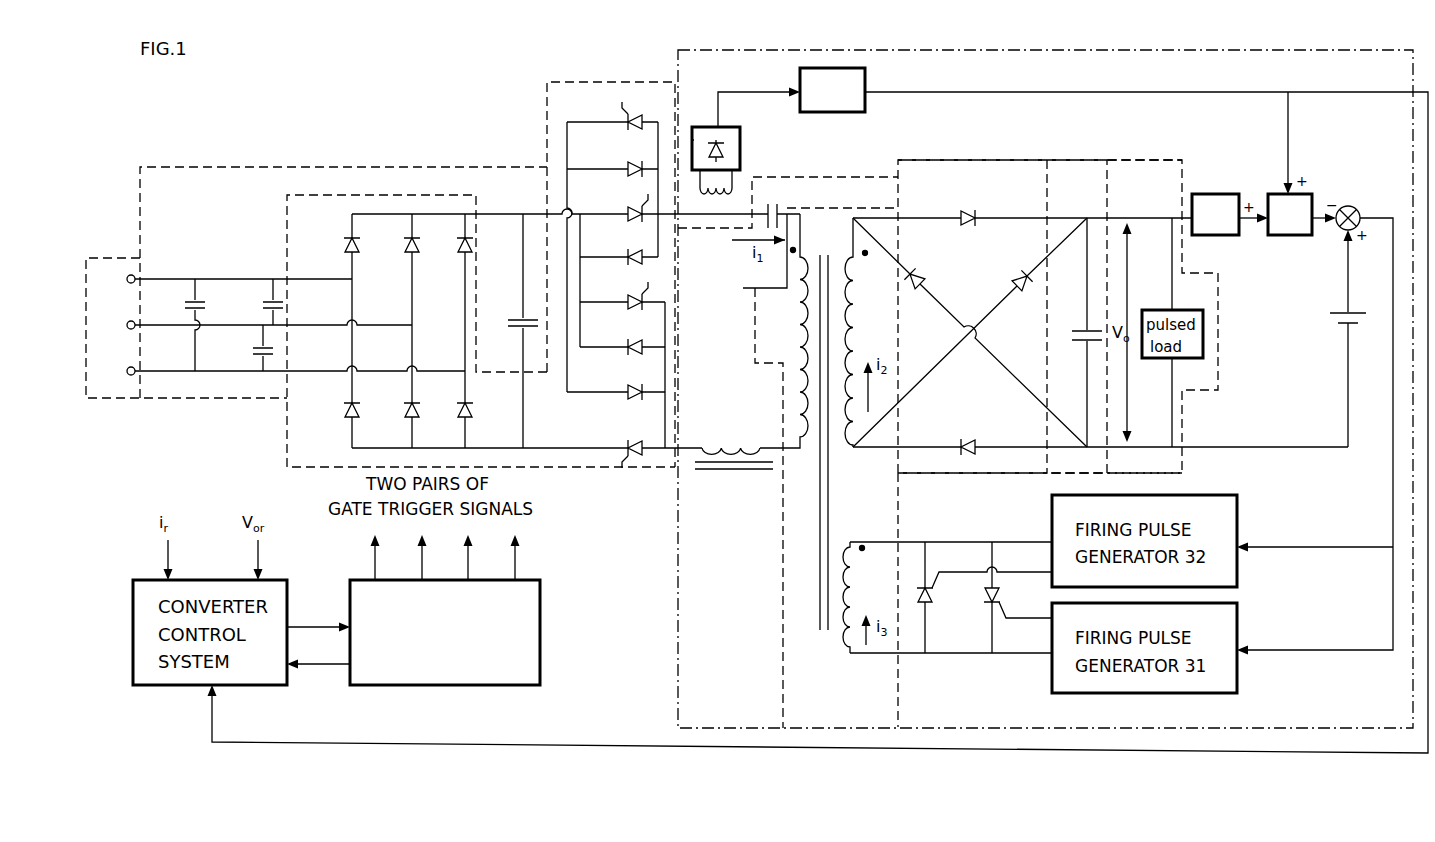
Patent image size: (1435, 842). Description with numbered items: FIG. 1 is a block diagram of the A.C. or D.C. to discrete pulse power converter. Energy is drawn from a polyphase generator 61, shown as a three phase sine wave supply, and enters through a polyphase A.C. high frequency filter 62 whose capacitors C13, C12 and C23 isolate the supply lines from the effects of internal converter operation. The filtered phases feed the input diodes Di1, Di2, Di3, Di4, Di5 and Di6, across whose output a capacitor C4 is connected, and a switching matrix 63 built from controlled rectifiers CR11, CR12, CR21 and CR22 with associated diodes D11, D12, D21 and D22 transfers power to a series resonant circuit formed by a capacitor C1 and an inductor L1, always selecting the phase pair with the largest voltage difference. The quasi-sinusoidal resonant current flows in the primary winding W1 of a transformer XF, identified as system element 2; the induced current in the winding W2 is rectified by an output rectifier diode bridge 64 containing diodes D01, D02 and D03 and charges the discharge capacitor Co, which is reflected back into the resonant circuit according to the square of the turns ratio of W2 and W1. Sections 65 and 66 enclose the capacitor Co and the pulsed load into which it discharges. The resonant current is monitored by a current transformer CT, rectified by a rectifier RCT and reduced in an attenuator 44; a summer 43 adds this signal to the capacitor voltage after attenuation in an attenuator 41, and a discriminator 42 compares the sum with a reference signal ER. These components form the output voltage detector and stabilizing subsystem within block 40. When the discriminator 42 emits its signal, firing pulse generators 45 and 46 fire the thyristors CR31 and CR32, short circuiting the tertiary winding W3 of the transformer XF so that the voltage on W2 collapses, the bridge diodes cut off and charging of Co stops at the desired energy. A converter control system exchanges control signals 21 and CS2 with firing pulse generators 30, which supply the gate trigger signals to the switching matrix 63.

The transformer system element 2 is at (780, 596).
The control signal CS1 21 is at (292, 592).
The firing pulse generators 30 is at (540, 596).
The output voltage detector and stabilizing subsystem 40 is at (1064, 50).
The attenuator 41 is at (1212, 240).
The discriminator 42 is at (1355, 207).
The summer 43 is at (1286, 240).
The attenuator 44 is at (836, 118).
The firing pulse generator 45 is at (1176, 484).
The firing pulse generator 46 is at (1166, 713).
The polyphase generator 61 is at (140, 259).
The polyphase A.C. high frequency filter 62 is at (248, 167).
The switching matrix 63 is at (640, 81).
The output rectifier diode bridge 64 is at (990, 160).
The output filter capacitor section 65 is at (1102, 160).
The load section 66 is at (1168, 160).
The input filter capacitor C13 is at (185, 300).
The input filter capacitor C12 is at (262, 300).
The input filter capacitor C23 is at (252, 350).
The DC link capacitor C4 is at (518, 330).
The resonant capacitor C1 is at (780, 205).
The resonant inductor L1 is at (708, 446).
The current transformer CT is at (746, 141).
The rectifier RCT is at (745, 140).
The transformer XF is at (822, 432).
The primary winding W1 is at (790, 334).
The secondary winding W2 is at (878, 334).
The tertiary winding W3 is at (866, 597).
The output rectifier bridge diode D01 is at (973, 206).
The output rectifier bridge diode D02 is at (1015, 280).
The output rectifier bridge diode D03 is at (922, 278).
The discharge capacitor Co is at (1079, 332).
The reference signal ER is at (1352, 338).
The thyristor CR31 is at (1000, 612).
The thyristor CR32 is at (933, 604).
The thyristor CR11 is at (624, 208).
The thyristor CR12 is at (626, 299).
The thyristor CR21 is at (624, 118).
The thyristor CR22 is at (618, 452).
The feedback diode D11 is at (628, 253).
The feedback diode D12 is at (626, 344).
The feedback diode D21 is at (628, 165).
The feedback diode D22 is at (627, 388).
The input diode Di1 is at (343, 244).
The input diode Di2 is at (340, 412).
The input diode Di3 is at (403, 244).
The input diode Di4 is at (400, 412).
The input diode Di5 is at (457, 244).
The input diode Di6 is at (456, 412).
The control signal CS2 is at (318, 656).